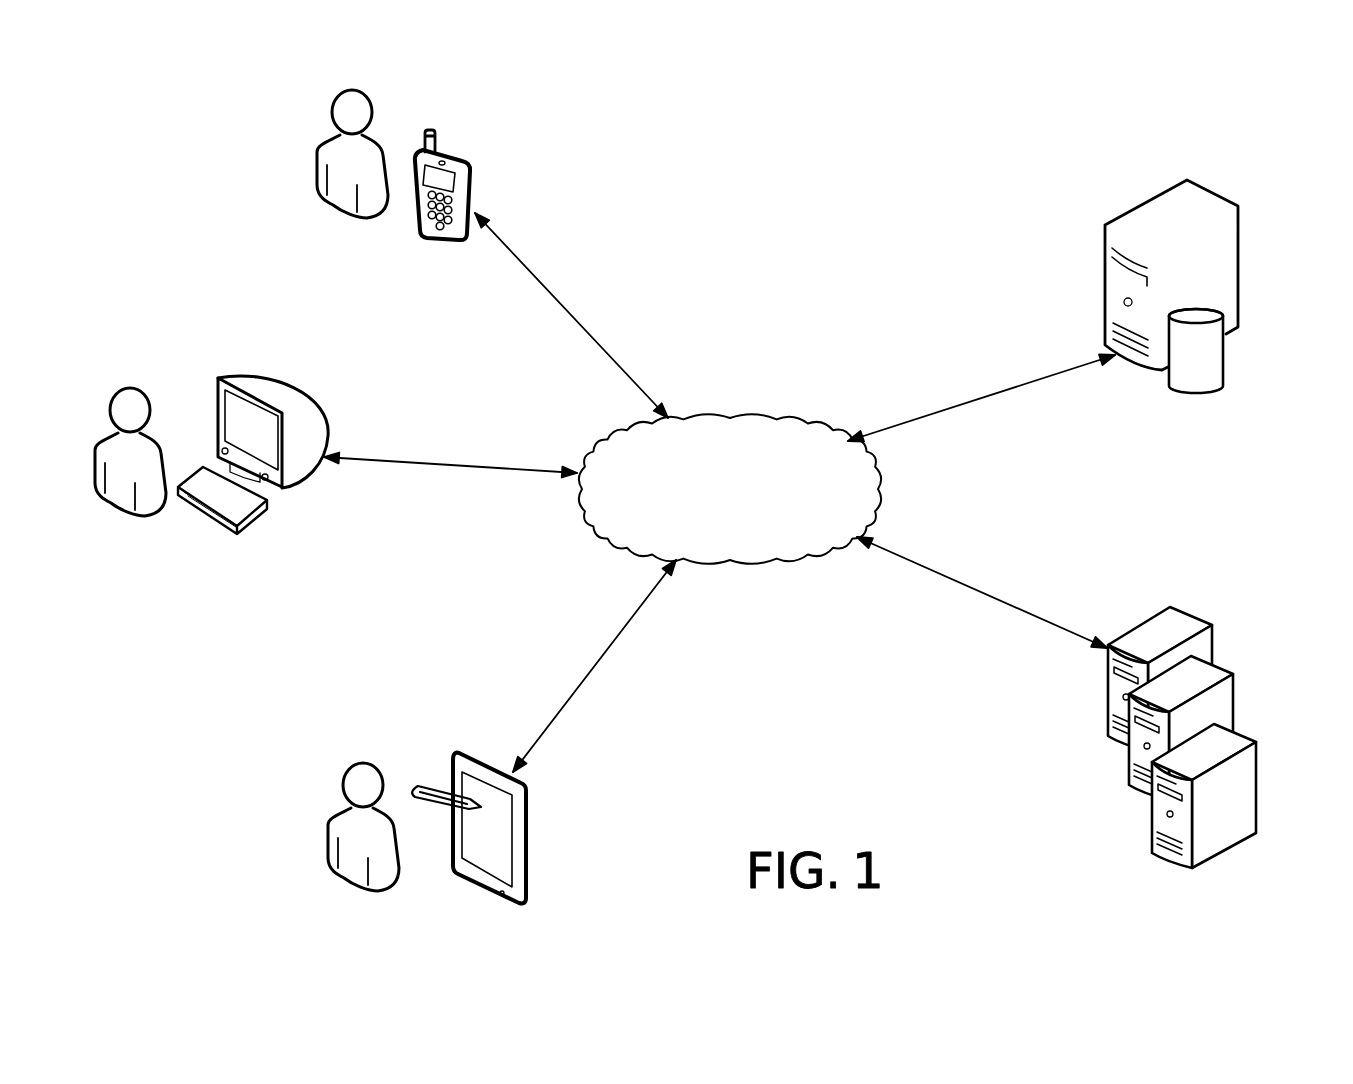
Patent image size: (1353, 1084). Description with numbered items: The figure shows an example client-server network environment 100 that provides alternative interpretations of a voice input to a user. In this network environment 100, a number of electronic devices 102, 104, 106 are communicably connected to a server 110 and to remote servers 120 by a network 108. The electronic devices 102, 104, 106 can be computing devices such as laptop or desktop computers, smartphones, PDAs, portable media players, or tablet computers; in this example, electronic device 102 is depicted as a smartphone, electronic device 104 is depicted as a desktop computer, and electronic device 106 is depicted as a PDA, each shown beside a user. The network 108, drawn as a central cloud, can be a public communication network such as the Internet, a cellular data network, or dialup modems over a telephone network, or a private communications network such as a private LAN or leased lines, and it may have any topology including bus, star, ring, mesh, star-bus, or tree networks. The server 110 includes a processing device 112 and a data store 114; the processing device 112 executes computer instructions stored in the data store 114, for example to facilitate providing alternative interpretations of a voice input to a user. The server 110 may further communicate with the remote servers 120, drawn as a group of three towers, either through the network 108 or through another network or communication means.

The network environment 100 is at (858, 138).
The electronic device 102 is at (458, 152).
The electronic device 104 is at (293, 388).
The electronic device 106 is at (465, 753).
The network 108 is at (727, 413).
The server 110 is at (1181, 278).
The processing device 112 is at (1212, 190).
The data store 114 is at (1225, 368).
The remote servers 120 is at (1100, 834).